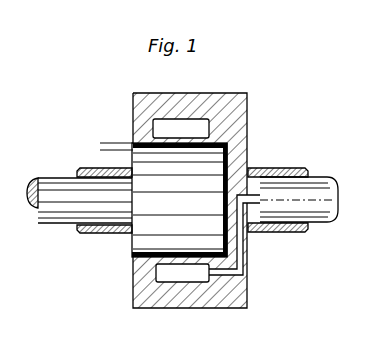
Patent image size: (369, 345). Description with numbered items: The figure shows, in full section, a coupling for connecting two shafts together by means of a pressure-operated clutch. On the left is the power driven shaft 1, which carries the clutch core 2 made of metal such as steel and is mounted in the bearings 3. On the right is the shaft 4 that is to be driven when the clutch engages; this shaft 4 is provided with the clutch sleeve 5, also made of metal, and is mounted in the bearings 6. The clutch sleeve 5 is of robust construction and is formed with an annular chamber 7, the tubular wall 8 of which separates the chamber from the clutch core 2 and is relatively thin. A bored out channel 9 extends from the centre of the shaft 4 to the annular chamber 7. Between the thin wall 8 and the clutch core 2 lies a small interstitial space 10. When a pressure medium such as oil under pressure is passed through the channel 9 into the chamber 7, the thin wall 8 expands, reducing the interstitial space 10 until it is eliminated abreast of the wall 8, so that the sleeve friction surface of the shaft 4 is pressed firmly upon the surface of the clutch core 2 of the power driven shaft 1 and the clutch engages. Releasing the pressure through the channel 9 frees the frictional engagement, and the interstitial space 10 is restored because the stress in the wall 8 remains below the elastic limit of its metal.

The power driven shaft 1 is at (52, 192).
The clutch core 2 is at (143, 243).
The bearings 3 is at (80, 233).
The shaft to be driven 4 is at (315, 182).
The clutch sleeve 5 is at (202, 103).
The bearings 6 is at (291, 232).
The annular chamber 7 is at (180, 272).
The tubular wall 8 is at (200, 140).
The bored out channel 9 is at (240, 263).
The interstitial space 10 is at (107, 135).